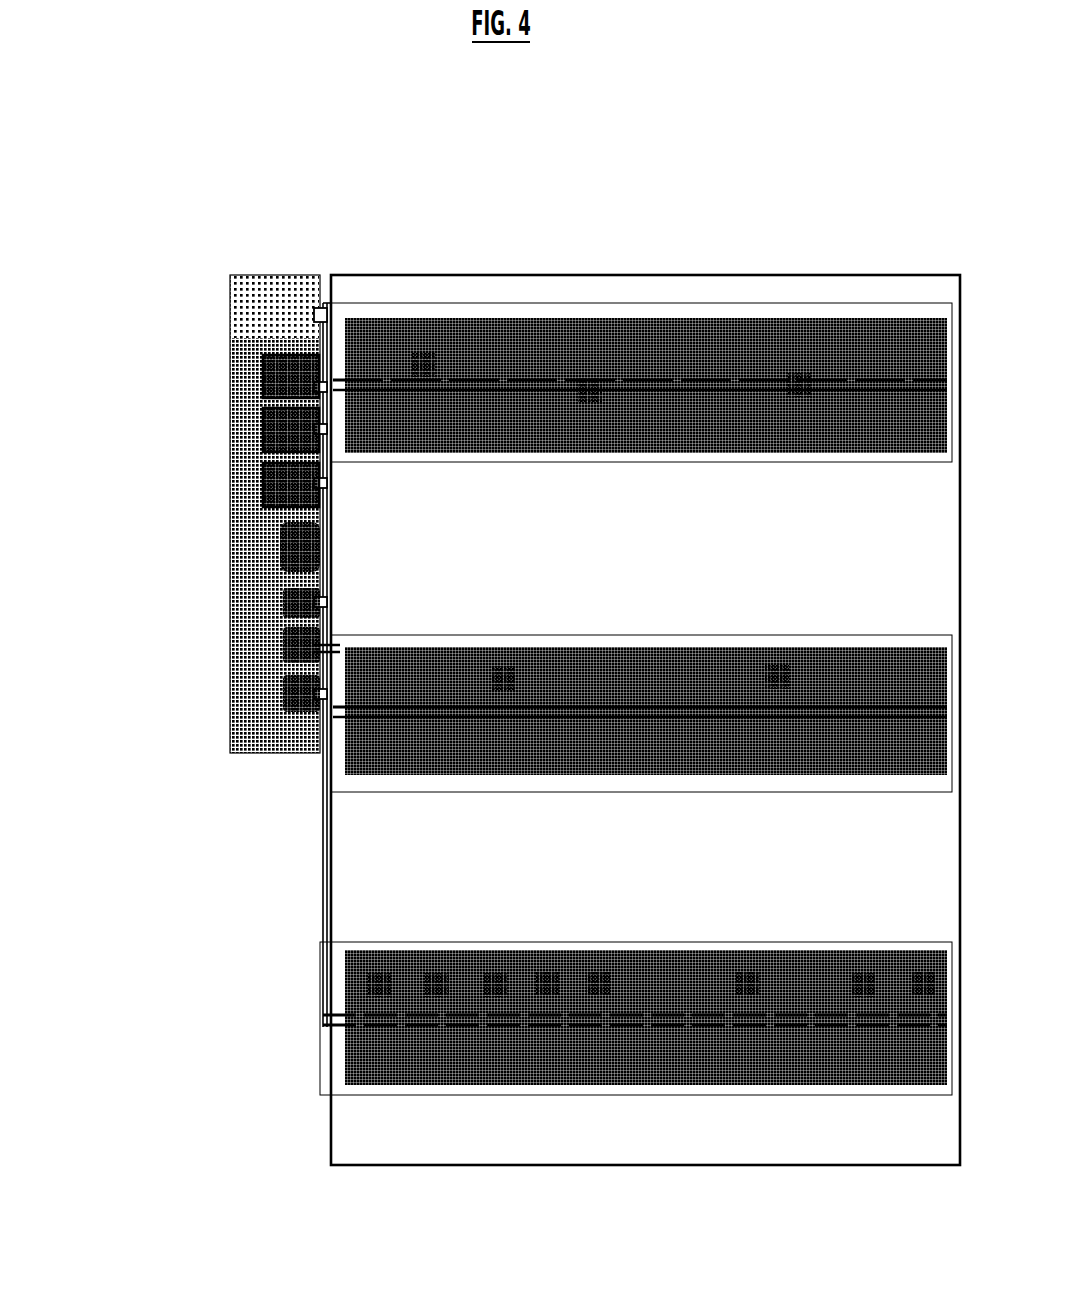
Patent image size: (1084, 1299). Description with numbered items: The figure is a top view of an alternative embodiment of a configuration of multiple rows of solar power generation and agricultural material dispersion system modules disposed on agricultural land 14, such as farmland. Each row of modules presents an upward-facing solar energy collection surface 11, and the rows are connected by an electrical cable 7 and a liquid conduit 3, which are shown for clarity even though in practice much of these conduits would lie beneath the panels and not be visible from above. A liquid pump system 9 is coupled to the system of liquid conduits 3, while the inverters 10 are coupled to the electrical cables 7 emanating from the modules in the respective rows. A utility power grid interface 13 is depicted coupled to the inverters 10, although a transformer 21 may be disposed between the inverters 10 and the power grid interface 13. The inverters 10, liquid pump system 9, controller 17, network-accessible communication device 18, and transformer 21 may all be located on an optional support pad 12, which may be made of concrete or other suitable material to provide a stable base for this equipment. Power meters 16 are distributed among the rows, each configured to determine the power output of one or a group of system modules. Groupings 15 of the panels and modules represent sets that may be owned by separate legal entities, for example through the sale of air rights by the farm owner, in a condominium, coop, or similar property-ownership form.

The liquid conduit 3 is at (641, 304).
The electrical cable 7 is at (639, 374).
The liquid pump system 9 is at (278, 547).
The inverters 10 is at (262, 482).
The solar energy collection surface 11 is at (475, 345).
The support pad 12 is at (228, 737).
The utility power grid interface 13 is at (272, 274).
The agricultural land 14 is at (640, 1135).
The groupings 15 is at (438, 447).
The power meters 16 is at (423, 365).
The controller 17 is at (280, 603).
The network-accessible communication device 18 is at (280, 645).
The transformer 21 is at (280, 693).